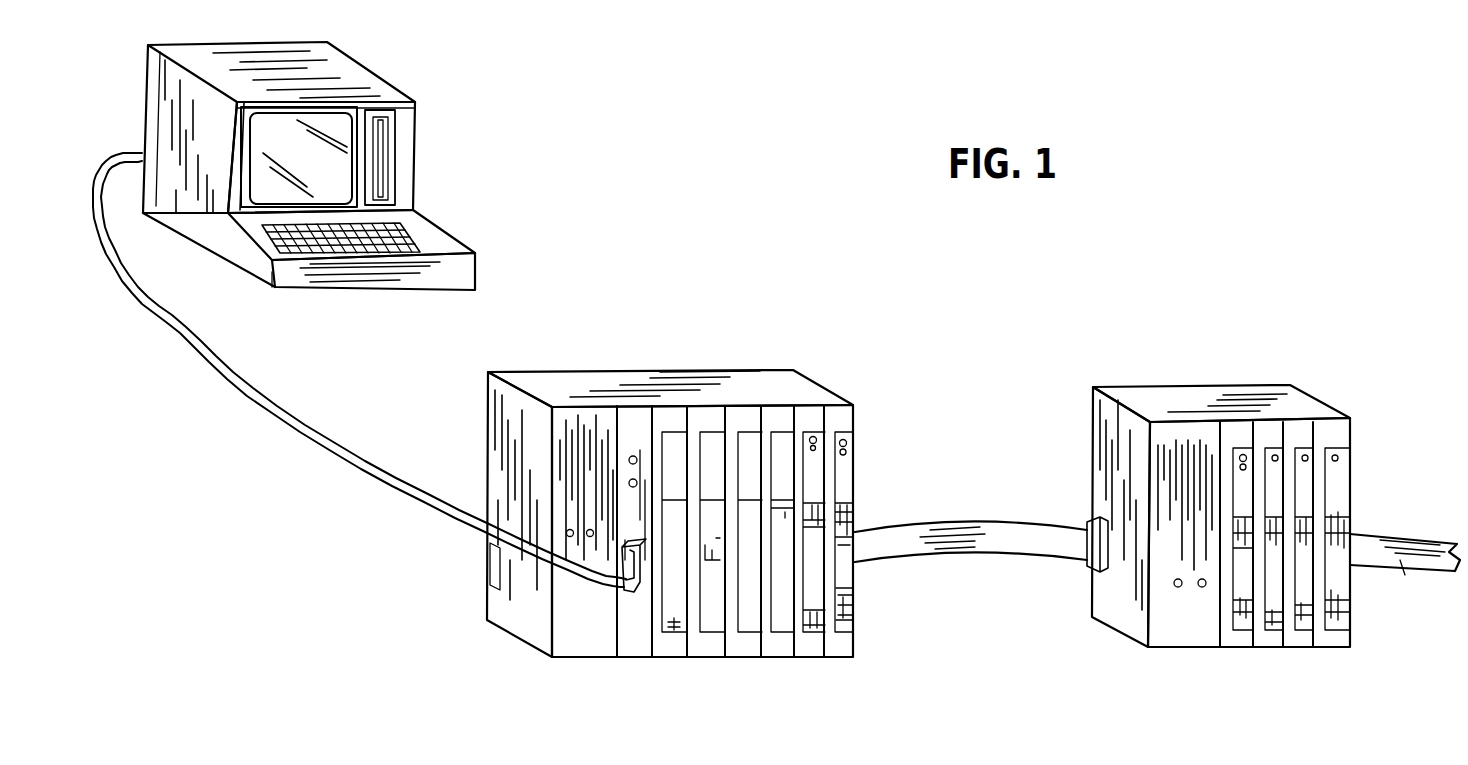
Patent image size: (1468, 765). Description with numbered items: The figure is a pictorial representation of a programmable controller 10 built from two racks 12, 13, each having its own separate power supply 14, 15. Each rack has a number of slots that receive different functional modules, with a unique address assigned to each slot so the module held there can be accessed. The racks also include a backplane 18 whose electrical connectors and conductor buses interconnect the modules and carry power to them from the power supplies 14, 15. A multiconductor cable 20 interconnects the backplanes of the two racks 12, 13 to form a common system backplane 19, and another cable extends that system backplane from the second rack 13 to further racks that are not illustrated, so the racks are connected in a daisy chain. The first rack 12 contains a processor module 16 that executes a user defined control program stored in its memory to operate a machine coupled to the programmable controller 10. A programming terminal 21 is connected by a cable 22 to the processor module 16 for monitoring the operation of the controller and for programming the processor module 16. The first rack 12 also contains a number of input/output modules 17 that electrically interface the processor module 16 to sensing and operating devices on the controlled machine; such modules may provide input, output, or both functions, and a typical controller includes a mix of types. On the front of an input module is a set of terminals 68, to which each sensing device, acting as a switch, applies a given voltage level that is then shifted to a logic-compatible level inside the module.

The programmable controller 10 is at (438, 593).
The first rack 12 is at (670, 510).
The second rack 13 is at (1221, 507).
The power supply 14 is at (580, 640).
The power supply 15 is at (1172, 635).
The processor module 16 is at (633, 643).
The input/output modules 17 is at (673, 642).
The backplane 18 is at (620, 372).
The system backplane 19 is at (779, 366).
The multiconductor cable 20 is at (1018, 548).
The programming terminal 21 is at (425, 171).
The cable 22 is at (365, 465).
The terminals 68 is at (855, 608).